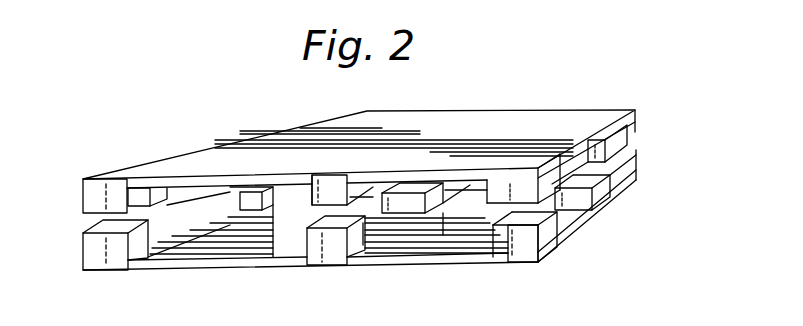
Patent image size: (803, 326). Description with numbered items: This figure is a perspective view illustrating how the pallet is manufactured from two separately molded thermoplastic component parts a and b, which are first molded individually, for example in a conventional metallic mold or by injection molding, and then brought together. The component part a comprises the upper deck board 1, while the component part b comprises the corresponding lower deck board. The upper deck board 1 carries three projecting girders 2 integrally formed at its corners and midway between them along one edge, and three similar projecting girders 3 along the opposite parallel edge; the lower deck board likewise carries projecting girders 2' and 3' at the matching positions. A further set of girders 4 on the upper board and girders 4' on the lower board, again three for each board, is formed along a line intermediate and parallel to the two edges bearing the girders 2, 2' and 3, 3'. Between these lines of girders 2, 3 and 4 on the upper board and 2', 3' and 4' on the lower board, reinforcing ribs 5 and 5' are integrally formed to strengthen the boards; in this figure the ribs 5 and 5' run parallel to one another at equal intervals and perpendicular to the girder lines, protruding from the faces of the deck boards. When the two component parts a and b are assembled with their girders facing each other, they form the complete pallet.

The upper deck board 1 is at (326, 124).
The component part a is at (538, 120).
The component part b is at (406, 265).
The projecting girders 2 is at (105, 173).
The projecting girders 2' is at (150, 267).
The projecting girders 3 is at (593, 123).
The projecting girders 3' is at (604, 182).
The girders 4 is at (237, 161).
The girders 4' is at (257, 260).
The reinforcing ribs 5 is at (425, 136).
The reinforcing ribs 5' is at (460, 259).